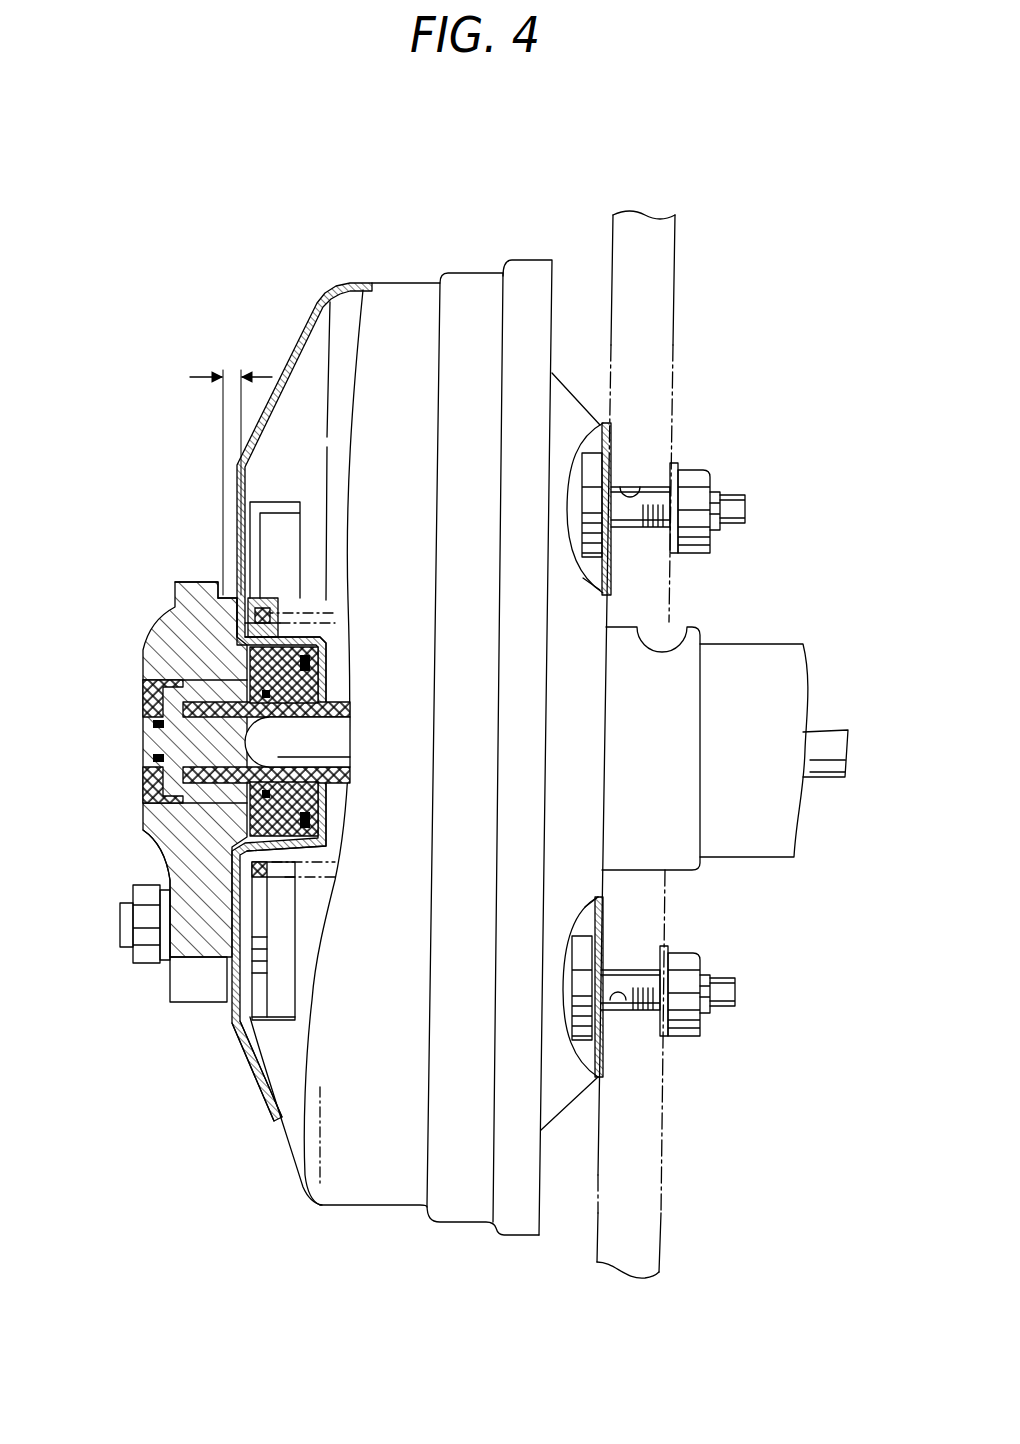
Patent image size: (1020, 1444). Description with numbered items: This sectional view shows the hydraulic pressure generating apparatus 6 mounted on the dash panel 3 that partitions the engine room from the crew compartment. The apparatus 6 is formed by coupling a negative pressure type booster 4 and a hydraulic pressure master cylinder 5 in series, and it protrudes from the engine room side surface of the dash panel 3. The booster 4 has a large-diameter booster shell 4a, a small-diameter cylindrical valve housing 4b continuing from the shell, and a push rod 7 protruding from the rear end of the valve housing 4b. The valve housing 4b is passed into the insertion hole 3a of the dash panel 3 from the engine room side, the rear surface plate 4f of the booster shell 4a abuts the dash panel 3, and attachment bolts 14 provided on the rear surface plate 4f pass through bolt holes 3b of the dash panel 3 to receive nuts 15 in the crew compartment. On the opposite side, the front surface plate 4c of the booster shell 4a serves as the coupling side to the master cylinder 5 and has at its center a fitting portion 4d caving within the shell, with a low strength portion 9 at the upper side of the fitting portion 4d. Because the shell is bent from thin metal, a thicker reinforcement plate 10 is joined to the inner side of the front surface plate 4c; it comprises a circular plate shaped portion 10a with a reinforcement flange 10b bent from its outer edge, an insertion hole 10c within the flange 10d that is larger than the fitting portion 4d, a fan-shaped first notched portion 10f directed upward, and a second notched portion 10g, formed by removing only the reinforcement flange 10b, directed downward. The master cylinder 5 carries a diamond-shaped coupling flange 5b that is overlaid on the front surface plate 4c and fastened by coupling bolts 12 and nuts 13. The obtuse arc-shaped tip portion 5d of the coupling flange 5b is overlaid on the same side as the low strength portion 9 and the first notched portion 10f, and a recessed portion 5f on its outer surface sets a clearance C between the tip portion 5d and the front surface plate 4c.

The dash panel 3 is at (665, 282).
The insertion hole 3a is at (687, 627).
The bolt holes 3b is at (631, 487).
The negative pressure type booster 4 is at (396, 270).
The booster shell 4a is at (477, 278).
The valve housing 4b is at (768, 660).
The front surface plate 4c is at (237, 490).
The fitting portion 4d is at (330, 663).
The rear surface plate 4f is at (602, 912).
The hydraulic pressure master cylinder 5 is at (127, 658).
The coupling flange 5b is at (197, 862).
The arc-shaped tip portion 5d is at (190, 590).
The recessed portion 5f is at (230, 596).
The hydraulic pressure generating apparatus 6 is at (227, 804).
The push rod 7 is at (343, 743).
The low strength portion 9 is at (238, 580).
The reinforcement plate 10 is at (296, 489).
The plate shaped portion 10a is at (293, 1018).
The reinforcement flange 10b is at (280, 984).
The insertion hole 10c is at (243, 653).
The flange 10d is at (273, 878).
The first notched portion 10f is at (252, 559).
The second notched portion 10g is at (275, 1022).
The coupling bolts 12 is at (260, 924).
The nuts 13 is at (145, 932).
The attachment bolts 14 is at (587, 497).
The nuts 15 is at (699, 477).
The clearance C is at (231, 467).